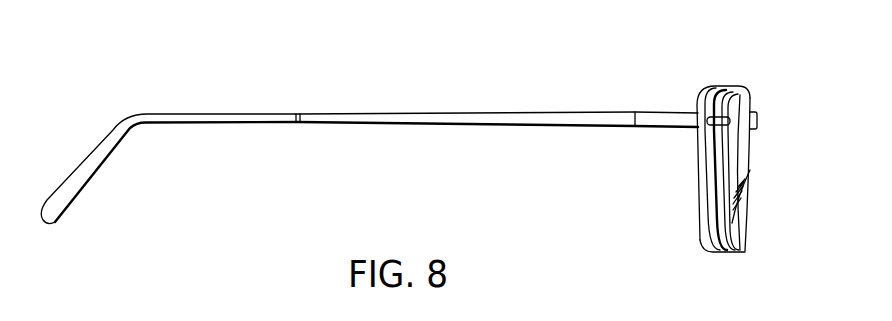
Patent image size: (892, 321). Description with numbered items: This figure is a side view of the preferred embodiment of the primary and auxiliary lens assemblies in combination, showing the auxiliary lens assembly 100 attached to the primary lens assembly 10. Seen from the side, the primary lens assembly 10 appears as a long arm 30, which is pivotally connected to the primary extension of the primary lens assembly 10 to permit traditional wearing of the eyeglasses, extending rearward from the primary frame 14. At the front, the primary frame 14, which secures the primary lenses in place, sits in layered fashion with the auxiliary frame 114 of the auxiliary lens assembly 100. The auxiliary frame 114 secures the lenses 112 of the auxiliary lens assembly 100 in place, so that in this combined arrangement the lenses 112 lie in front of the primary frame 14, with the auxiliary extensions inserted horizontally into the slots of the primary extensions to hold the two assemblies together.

The primary lens assembly 10 is at (504, 80).
The arm 30 is at (484, 118).
The auxiliary lens assembly 100 is at (754, 65).
The primary frame 14 is at (703, 164).
The auxiliary frame 114 is at (718, 207).
The lenses 112 is at (742, 225).